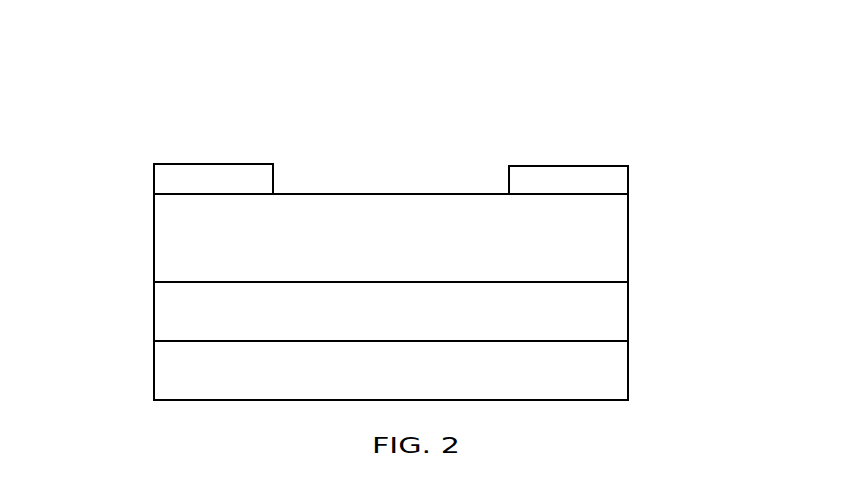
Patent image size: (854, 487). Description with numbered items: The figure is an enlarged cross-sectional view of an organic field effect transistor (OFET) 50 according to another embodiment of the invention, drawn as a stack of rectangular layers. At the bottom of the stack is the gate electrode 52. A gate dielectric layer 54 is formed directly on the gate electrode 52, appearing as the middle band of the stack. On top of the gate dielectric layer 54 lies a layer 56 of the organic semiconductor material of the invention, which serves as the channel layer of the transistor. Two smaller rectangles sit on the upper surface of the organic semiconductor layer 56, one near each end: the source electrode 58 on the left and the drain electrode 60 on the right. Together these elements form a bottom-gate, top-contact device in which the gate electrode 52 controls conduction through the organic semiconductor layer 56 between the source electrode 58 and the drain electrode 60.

The organic field effect transistor 50 is at (394, 158).
The gate electrode 52 is at (598, 372).
The gate dielectric layer 54 is at (195, 310).
The organic semiconductor layer 56 is at (362, 243).
The source electrode 58 is at (198, 177).
The drain electrode 60 is at (573, 178).